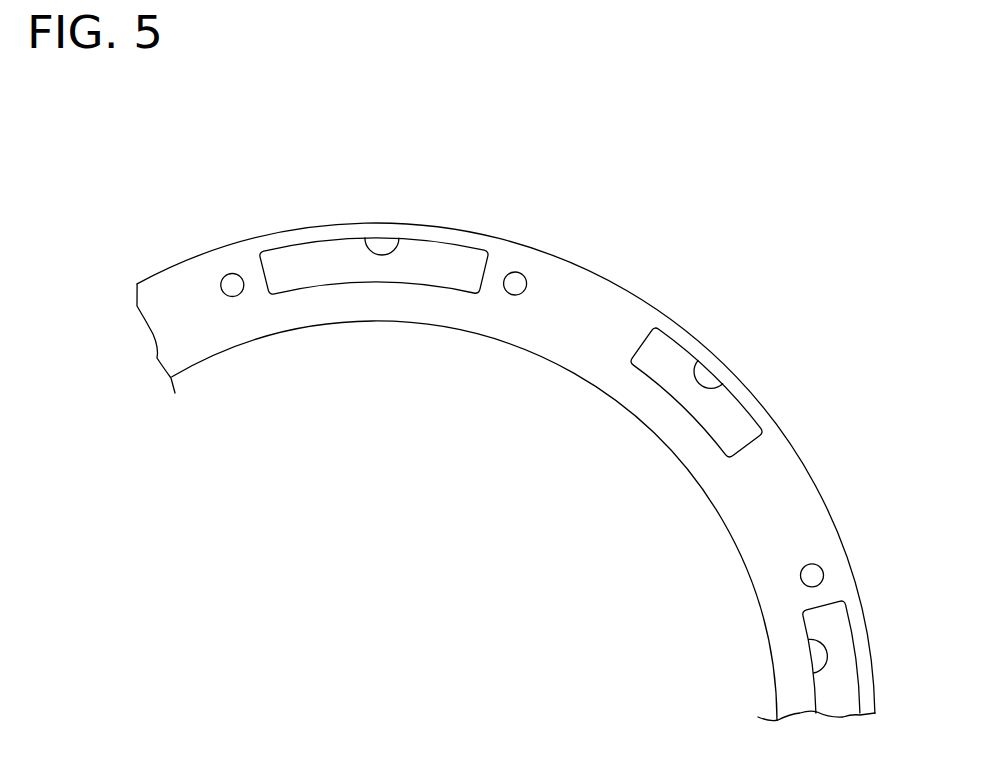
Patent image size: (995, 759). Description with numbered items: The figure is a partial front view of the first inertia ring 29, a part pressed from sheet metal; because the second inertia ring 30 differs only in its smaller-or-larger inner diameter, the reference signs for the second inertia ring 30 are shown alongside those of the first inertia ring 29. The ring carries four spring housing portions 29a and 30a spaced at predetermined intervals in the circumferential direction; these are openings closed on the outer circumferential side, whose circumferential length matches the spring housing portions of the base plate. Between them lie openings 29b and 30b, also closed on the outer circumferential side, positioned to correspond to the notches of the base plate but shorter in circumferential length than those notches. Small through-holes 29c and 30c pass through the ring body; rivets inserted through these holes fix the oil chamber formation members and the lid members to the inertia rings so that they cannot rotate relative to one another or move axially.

The first inertia ring 29 is at (506, 428).
The second inertia ring 30 is at (202, 244).
The spring housing portion 29a is at (754, 350).
The spring housing portion 30a is at (720, 373).
The opening 29b is at (560, 406).
The opening 30b is at (398, 249).
The through-hole 29c is at (522, 381).
The through-hole 30c is at (522, 289).